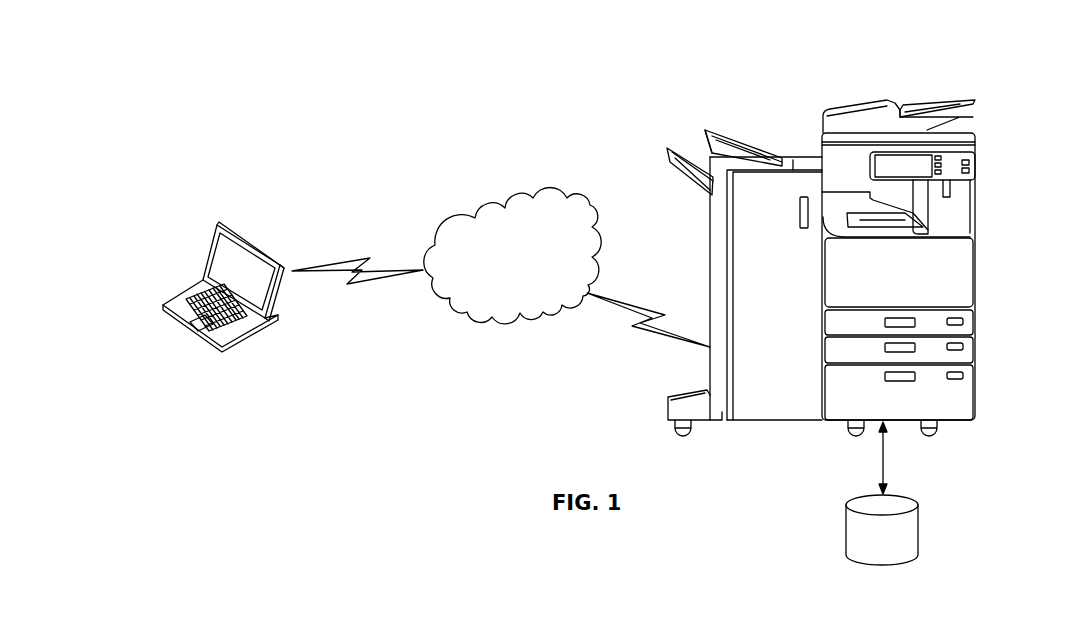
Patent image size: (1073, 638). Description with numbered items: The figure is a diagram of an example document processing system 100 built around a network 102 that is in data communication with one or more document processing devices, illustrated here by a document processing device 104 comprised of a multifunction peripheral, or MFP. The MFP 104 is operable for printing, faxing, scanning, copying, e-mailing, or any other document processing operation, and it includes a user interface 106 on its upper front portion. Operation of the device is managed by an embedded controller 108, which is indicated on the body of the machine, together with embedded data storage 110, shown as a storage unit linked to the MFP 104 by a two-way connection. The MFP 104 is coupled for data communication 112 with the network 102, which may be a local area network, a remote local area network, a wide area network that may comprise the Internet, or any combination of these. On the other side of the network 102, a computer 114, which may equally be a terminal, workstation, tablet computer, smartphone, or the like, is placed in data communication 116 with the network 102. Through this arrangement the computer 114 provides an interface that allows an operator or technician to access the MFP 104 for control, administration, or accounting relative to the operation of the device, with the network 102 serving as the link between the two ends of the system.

The document processing system 100 is at (283, 105).
The network 102 is at (520, 193).
The document processing device 104 is at (845, 107).
The user interface 106 is at (973, 162).
The embedded controller 108 is at (967, 253).
The embedded data storage 110 is at (918, 520).
The data communication 112 is at (650, 333).
The computer 114 is at (210, 243).
The data communication 116 is at (370, 285).